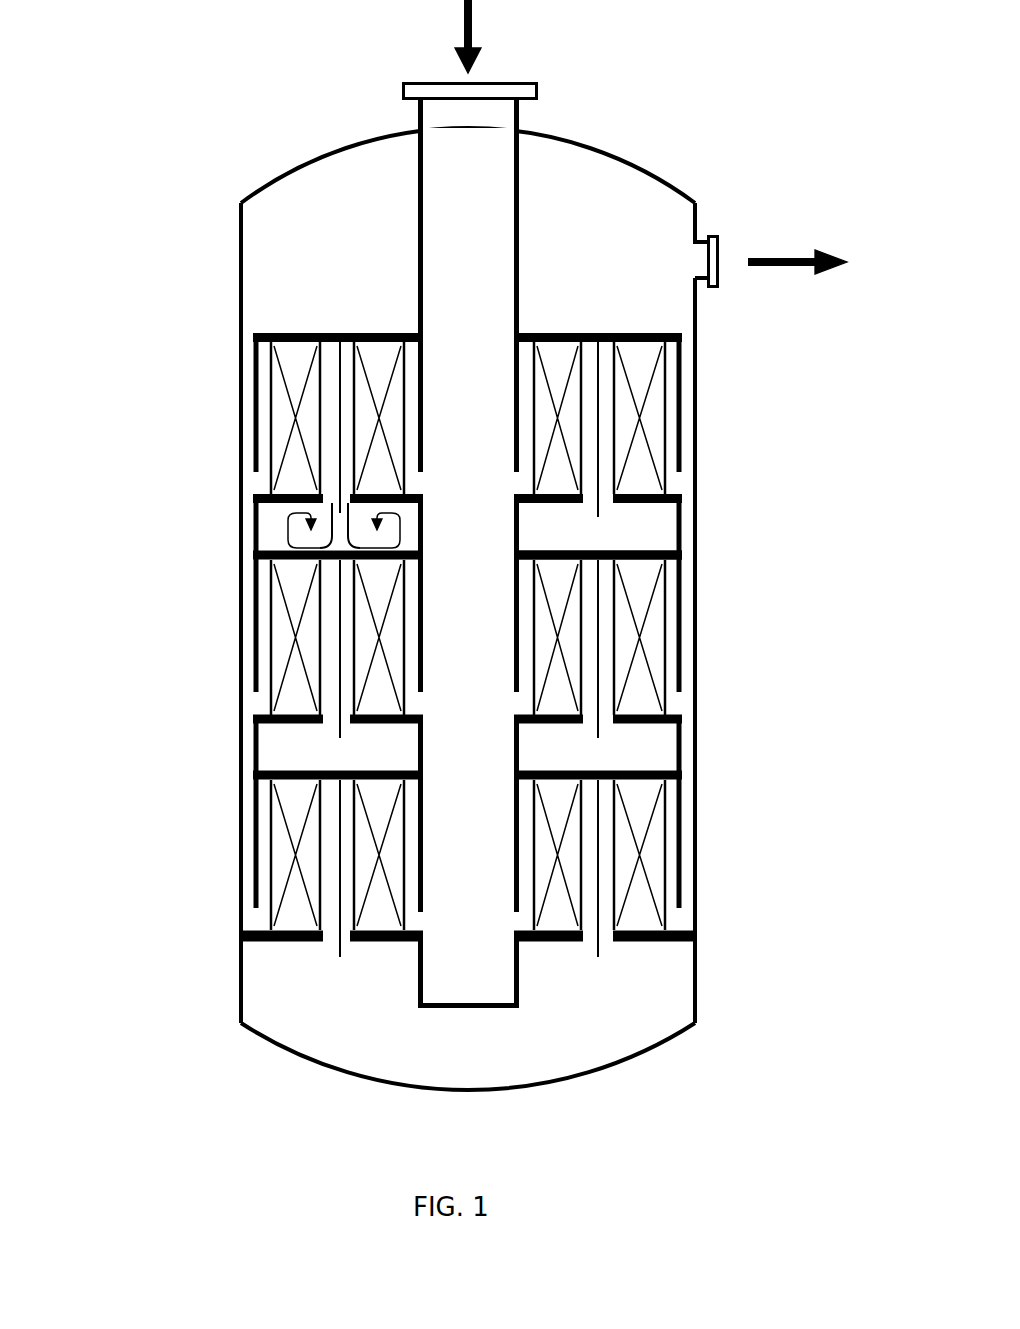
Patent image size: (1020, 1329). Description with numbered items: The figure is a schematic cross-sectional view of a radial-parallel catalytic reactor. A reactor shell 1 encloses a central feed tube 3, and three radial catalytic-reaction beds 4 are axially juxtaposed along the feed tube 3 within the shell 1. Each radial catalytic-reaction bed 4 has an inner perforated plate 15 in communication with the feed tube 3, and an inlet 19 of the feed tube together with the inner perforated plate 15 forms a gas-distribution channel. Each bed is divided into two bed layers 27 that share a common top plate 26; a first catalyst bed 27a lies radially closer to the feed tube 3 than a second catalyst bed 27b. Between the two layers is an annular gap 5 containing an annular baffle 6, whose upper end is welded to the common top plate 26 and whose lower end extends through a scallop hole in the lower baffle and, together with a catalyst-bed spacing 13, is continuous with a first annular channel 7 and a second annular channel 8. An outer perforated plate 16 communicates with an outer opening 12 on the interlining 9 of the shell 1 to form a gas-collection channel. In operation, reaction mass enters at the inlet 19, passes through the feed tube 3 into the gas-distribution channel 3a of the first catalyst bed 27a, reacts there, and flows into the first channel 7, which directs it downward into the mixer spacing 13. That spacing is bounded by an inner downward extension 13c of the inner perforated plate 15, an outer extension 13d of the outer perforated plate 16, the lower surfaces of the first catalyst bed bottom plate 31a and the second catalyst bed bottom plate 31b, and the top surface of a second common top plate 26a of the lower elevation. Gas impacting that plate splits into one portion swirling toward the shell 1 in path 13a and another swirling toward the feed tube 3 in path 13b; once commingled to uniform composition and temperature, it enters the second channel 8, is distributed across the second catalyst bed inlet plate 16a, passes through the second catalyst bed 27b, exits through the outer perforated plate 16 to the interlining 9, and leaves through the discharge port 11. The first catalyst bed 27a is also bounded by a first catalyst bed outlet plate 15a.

The reactor shell 1 is at (677, 180).
The feed tube 3 is at (418, 263).
The gas-distribution channel 3a is at (412, 418).
The radial catalytic-reaction bed 4 is at (102, 147).
The annular gap 5 is at (103, 773).
The annular baffle 6 is at (337, 465).
The first annular channel 7 is at (343, 717).
The second annular channel 8 is at (330, 683).
The interlining 9 is at (247, 362).
The discharge port 11 is at (720, 252).
The outer opening 12 is at (255, 482).
The mixer spacing 13 is at (275, 527).
The path toward the shell 13a is at (283, 542).
The path toward the feed tube 13b is at (350, 545).
The inner downward extension of the perforated inlet plate 13c is at (523, 530).
The outer extension of the perforated outer plate 13d is at (685, 525).
The inner perforated plate 15 is at (535, 420).
The first catalyst bed outlet plate 15a is at (588, 438).
The outer perforated plate 16 is at (668, 442).
The second catalyst bed inlet plate 16a is at (623, 480).
The feed-tube inlet 19 is at (418, 917).
The common top plate 26 is at (270, 330).
The second common top plate 26a is at (253, 553).
The bed layer 27 is at (383, 367).
The first catalyst bed 27a is at (563, 828).
The second catalyst bed 27b is at (638, 828).
The first catalyst bed bottom plate 31a is at (552, 945).
The second catalyst bed bottom plate 31b is at (652, 947).